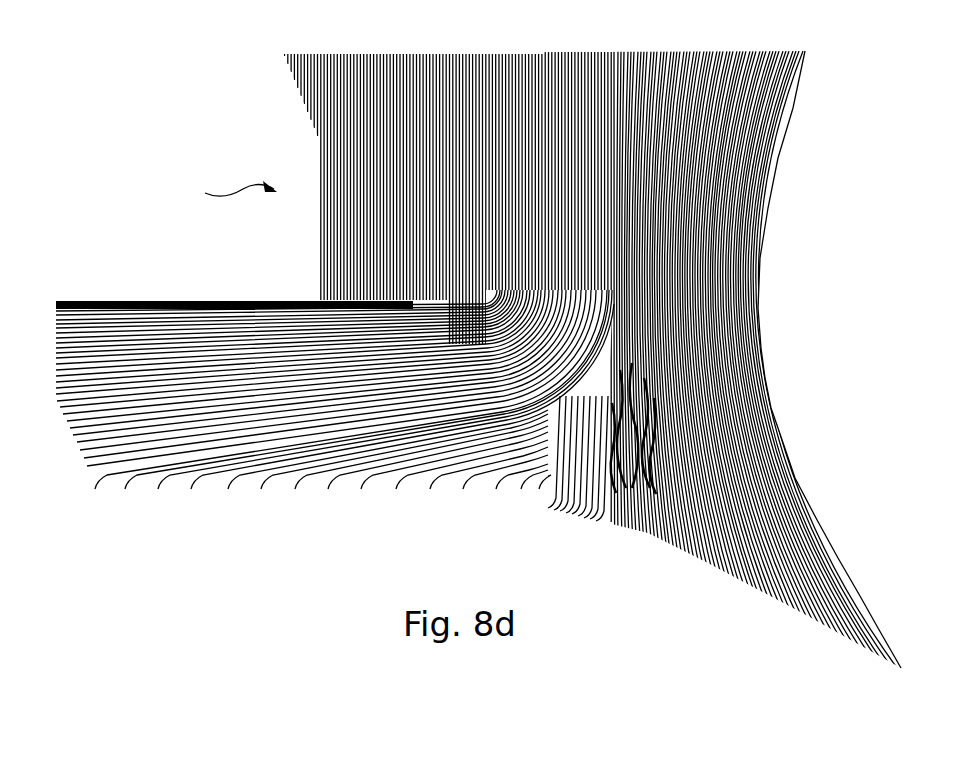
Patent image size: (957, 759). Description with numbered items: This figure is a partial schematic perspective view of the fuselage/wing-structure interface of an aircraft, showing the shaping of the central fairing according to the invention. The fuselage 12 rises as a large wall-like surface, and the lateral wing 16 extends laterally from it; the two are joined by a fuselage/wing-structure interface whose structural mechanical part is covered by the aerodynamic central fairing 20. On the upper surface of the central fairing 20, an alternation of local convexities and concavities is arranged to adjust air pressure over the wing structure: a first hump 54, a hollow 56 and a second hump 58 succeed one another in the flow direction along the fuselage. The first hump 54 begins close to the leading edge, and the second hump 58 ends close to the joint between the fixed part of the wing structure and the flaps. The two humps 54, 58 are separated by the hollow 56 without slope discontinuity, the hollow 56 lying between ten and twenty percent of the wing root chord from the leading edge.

The fuselage 12 is at (726, 179).
The lateral wing 16 is at (159, 293).
The central fairing 20 is at (224, 186).
The first hump 54 is at (612, 518).
The hollow 56 is at (540, 380).
The second hump 58 is at (373, 323).